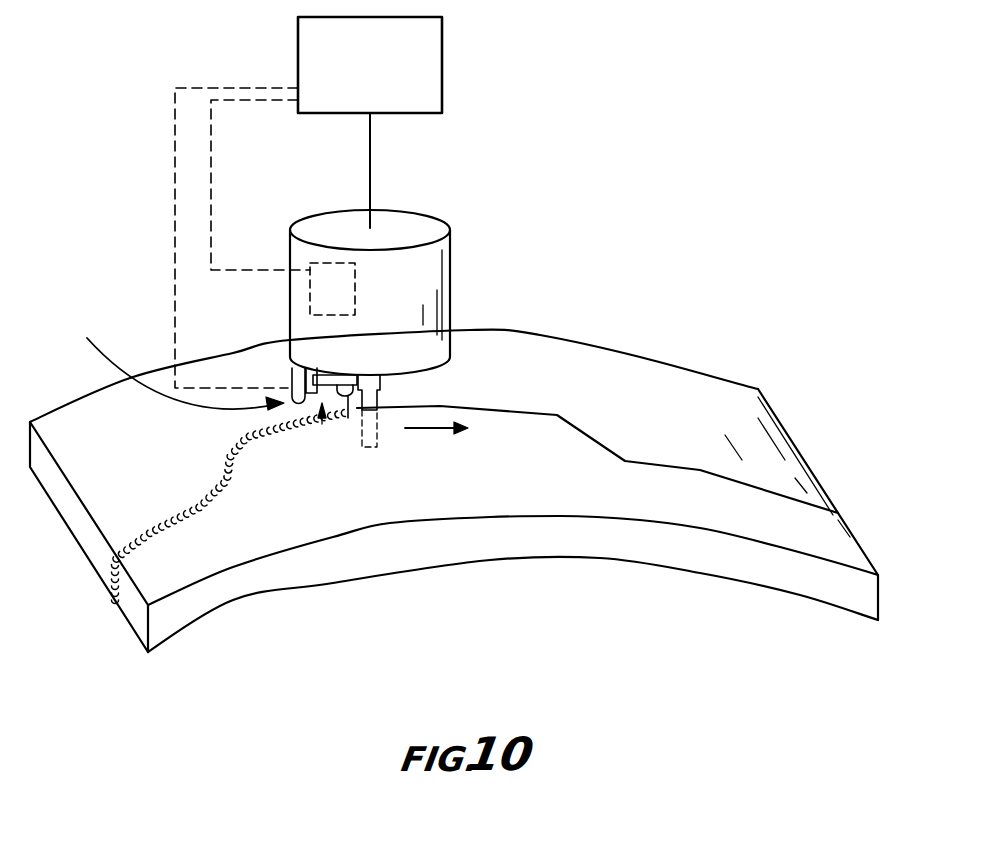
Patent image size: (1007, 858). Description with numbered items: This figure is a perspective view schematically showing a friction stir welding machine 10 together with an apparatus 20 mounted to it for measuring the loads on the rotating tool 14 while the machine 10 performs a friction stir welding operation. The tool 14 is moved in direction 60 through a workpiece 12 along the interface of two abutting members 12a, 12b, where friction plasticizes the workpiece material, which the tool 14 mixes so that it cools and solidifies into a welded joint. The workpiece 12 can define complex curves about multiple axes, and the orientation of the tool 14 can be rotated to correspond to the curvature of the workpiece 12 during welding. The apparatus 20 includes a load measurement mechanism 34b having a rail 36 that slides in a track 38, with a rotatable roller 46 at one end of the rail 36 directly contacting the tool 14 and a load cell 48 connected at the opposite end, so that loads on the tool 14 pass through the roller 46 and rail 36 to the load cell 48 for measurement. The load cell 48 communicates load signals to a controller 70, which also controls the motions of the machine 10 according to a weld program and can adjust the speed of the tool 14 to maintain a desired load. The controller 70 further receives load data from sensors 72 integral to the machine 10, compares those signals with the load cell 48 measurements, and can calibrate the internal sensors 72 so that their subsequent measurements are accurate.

The friction stir welding machine 10 is at (477, 165).
The workpiece 12 is at (792, 402).
The first member of the workpiece 12a is at (718, 385).
The second member of the workpiece 12b is at (843, 547).
The tool 14 is at (445, 375).
The apparatus 20 is at (168, 364).
The load measurement mechanism 34b is at (318, 420).
The rail 36 is at (320, 410).
The track 38 is at (337, 417).
The roller 46 is at (347, 413).
The load cell 48 is at (312, 418).
The direction of tool movement 60 is at (432, 432).
The controller 70 is at (383, 76).
The sensors 72 is at (265, 238).